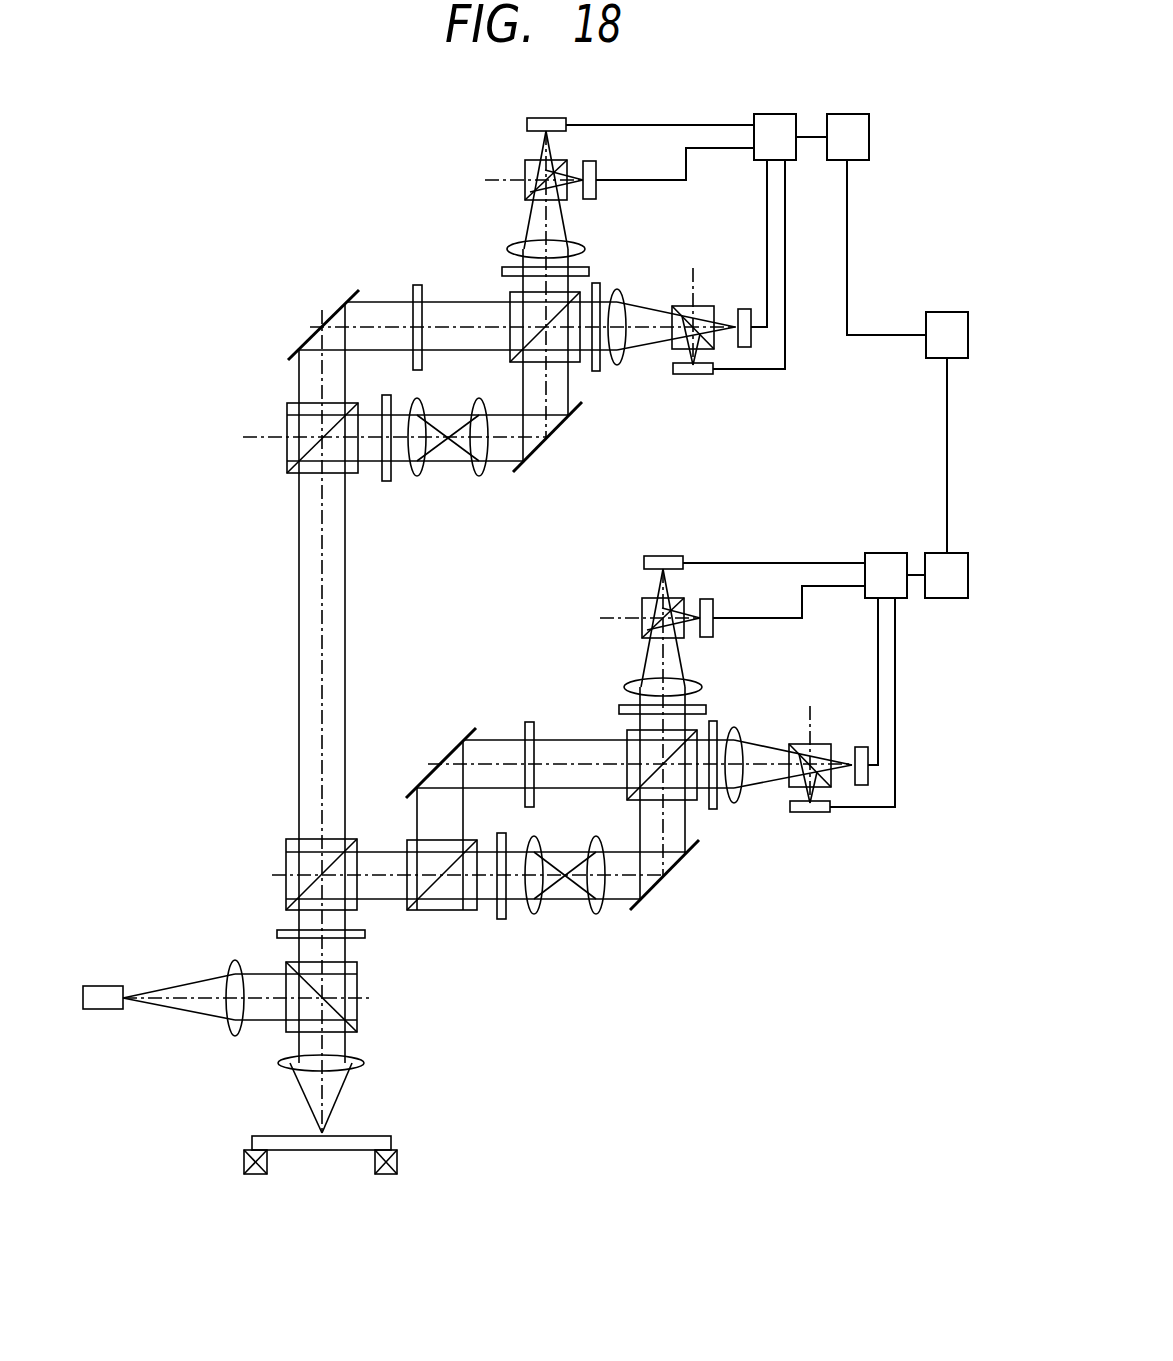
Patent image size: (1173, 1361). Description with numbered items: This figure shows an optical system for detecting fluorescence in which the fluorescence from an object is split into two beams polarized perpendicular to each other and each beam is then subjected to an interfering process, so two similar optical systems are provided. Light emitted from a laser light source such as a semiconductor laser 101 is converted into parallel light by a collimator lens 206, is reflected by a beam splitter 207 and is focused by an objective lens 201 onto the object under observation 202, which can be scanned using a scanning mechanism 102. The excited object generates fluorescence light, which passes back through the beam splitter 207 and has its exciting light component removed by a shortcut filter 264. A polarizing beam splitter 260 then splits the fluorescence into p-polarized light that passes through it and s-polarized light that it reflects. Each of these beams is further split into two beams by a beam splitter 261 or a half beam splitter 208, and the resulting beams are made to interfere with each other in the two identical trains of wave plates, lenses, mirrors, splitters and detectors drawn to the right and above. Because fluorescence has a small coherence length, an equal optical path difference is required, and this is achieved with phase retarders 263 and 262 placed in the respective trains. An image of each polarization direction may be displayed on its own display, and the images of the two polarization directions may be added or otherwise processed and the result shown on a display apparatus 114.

The laser light source 101 is at (107, 986).
The scanning mechanism 102 is at (398, 1162).
The display apparatus 114 is at (948, 312).
The objective lens 201 is at (287, 1072).
The object under observation 202 is at (382, 1136).
The collimator lens 206 is at (229, 963).
The polarizing beam splitter 207 is at (358, 1014).
The half beam splitter 208 is at (287, 418).
The polarizing beam splitter 260 is at (285, 853).
The beam splitter 261 is at (437, 913).
The phase retarder 262 is at (523, 720).
The phase retarder 263 is at (414, 290).
The shortcut filter 264 is at (278, 930).